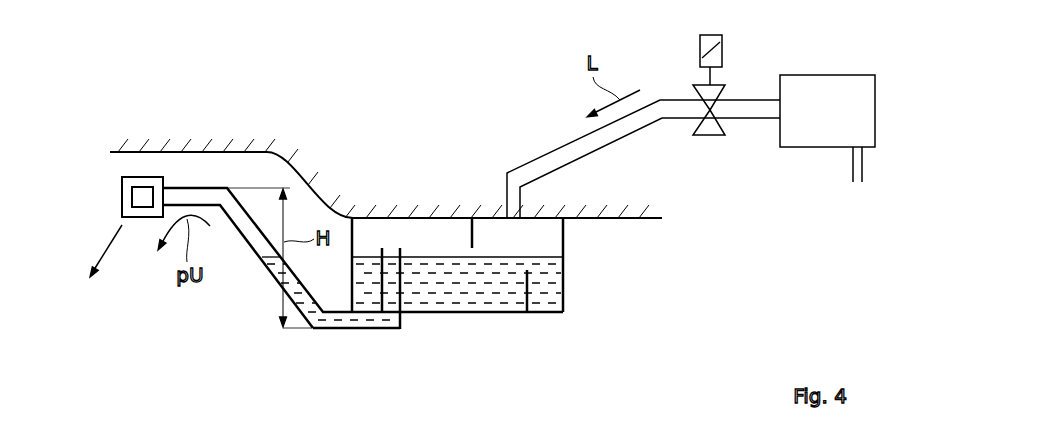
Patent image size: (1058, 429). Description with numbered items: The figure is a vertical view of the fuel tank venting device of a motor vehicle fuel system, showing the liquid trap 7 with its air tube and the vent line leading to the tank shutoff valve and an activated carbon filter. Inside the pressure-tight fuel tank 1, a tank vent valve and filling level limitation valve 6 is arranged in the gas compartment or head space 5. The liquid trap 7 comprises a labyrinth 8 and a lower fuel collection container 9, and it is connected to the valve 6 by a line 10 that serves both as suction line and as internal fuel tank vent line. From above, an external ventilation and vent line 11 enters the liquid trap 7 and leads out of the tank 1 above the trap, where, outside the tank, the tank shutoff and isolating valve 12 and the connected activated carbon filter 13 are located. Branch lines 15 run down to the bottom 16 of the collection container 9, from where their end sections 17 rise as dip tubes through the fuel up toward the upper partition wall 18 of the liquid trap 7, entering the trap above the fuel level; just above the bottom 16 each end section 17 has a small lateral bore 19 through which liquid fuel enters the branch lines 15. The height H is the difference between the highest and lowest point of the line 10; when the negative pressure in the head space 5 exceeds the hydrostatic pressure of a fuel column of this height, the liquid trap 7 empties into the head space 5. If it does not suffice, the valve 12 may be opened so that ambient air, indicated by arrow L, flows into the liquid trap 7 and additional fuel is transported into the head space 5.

The fuel tank 1 is at (236, 112).
The gas compartment or head space 5 is at (186, 178).
The tank vent valve and filling level limitation valve 6 is at (121, 195).
The liquid trap 7 is at (572, 262).
The labyrinth 8 is at (471, 235).
The fuel collection container 9 is at (423, 248).
The line 10 is at (258, 276).
The external ventilation and vent line 11 is at (545, 142).
The tank shutoff and isolating valve 12 is at (708, 138).
The control unit 13 is at (827, 74).
The branch lines 15 is at (346, 331).
The bottom 16 is at (482, 314).
The end sections 17 is at (382, 247).
The upper partition wall 18 is at (402, 213).
The lateral bore 19 is at (401, 282).